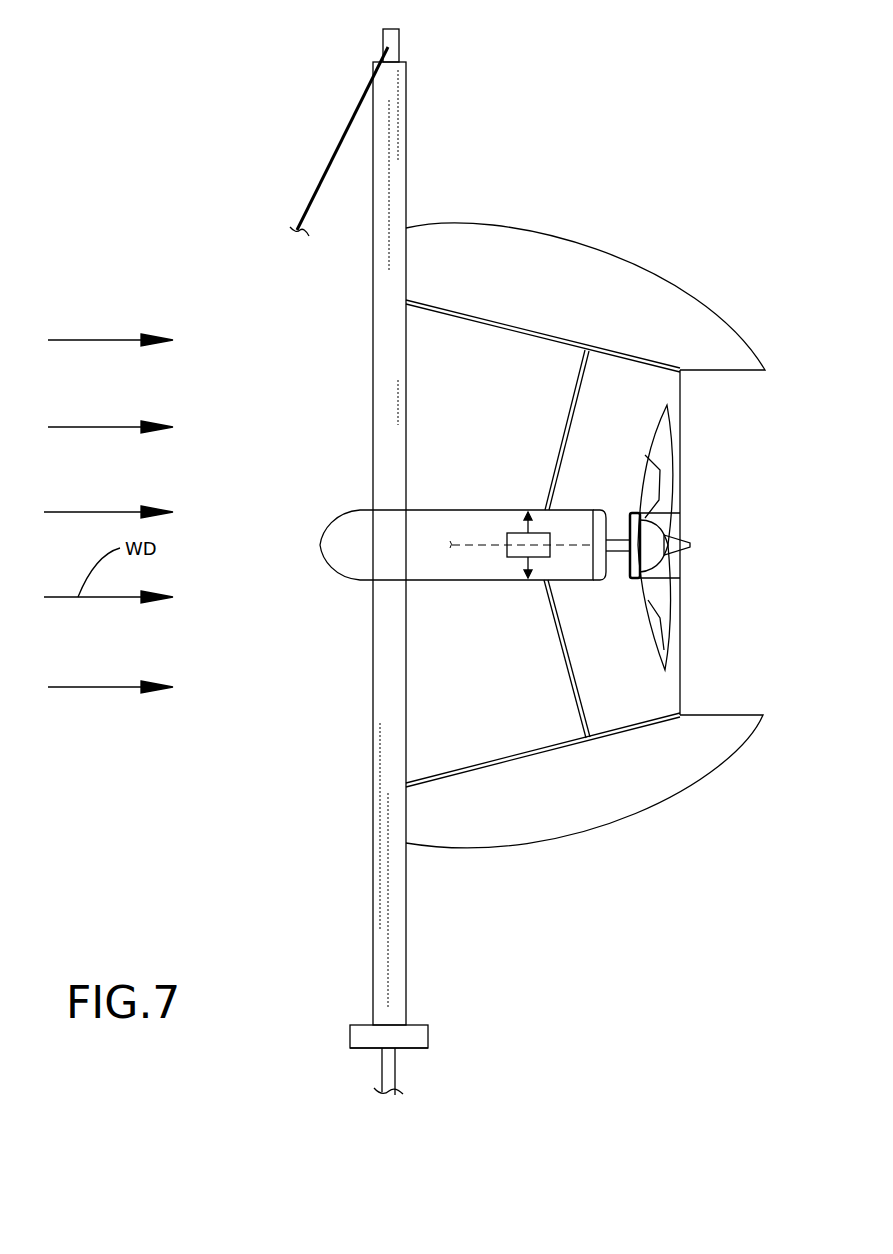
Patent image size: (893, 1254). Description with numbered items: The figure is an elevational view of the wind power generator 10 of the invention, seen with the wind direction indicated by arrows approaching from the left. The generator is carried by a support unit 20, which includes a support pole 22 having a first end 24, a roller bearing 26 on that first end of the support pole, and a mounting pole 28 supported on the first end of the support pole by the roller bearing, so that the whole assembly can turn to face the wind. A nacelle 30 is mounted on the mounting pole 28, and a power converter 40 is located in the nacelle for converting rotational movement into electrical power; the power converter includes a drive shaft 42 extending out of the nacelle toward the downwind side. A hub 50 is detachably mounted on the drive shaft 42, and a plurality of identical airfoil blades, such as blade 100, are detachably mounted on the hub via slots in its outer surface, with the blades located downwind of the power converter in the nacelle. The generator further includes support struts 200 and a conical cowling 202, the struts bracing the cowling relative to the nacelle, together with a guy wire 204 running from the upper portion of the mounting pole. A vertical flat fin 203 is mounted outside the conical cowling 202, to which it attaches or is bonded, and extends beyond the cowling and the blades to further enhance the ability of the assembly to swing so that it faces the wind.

The wind power generator 10 is at (557, 248).
The support unit 20 is at (324, 848).
The support pole 22 is at (400, 1067).
The first end 24 is at (363, 1050).
The roller bearing 26 is at (413, 1038).
The mounting pole 28 is at (395, 925).
The nacelle 30 is at (432, 520).
The power converter 40 is at (522, 547).
The drive shaft 42 is at (618, 538).
The hub 50 is at (638, 582).
The airfoil blade 100 is at (663, 455).
The support struts 200 is at (587, 400).
The cowling 202 is at (485, 317).
The vertical flat fin 203 is at (581, 798).
The guy wire 204 is at (335, 157).